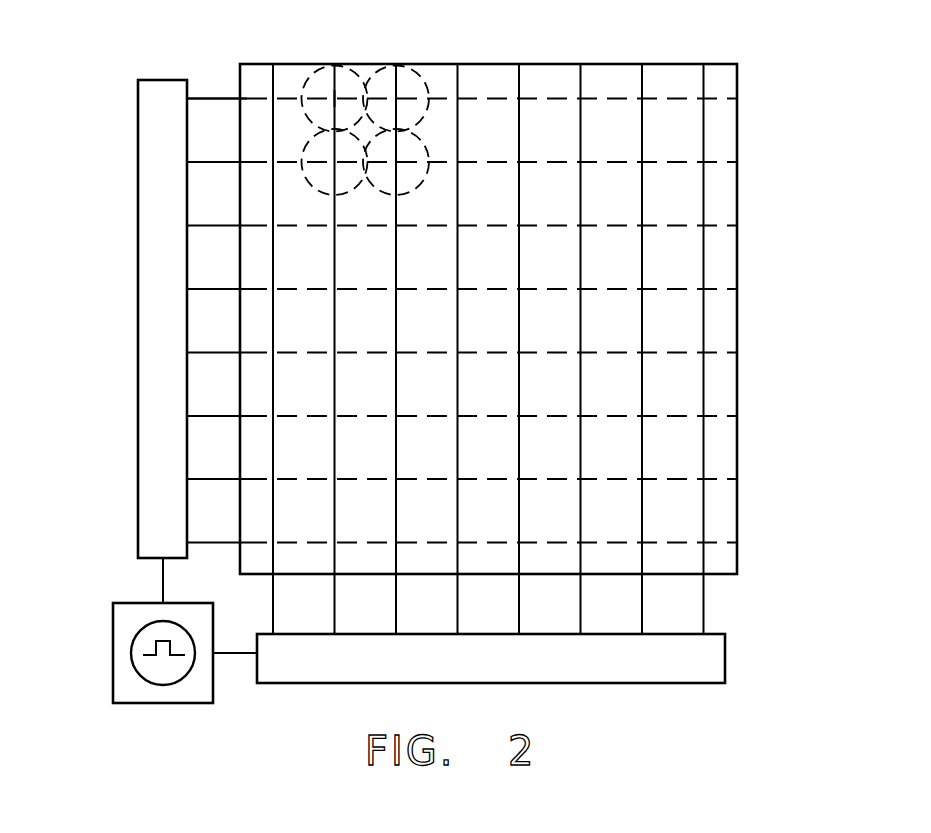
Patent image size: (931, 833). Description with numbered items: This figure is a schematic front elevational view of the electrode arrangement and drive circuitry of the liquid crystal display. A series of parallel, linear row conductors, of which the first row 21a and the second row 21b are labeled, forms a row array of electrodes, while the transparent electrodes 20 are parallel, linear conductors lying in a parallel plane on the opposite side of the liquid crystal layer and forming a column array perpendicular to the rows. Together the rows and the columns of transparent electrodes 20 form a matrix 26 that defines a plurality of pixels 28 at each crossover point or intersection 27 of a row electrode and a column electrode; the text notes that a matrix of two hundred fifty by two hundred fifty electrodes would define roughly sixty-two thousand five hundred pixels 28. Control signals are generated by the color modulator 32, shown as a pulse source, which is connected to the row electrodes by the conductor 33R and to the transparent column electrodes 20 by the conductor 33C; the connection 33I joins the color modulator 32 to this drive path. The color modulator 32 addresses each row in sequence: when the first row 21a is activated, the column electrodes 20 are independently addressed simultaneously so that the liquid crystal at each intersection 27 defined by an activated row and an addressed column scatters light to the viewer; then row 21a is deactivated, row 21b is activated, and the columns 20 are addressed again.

The transparent electrodes 20 is at (640, 87).
The first row electrode 21a is at (257, 96).
The second row electrode 21b is at (283, 162).
The matrix 26 is at (506, 320).
The intersection 27 is at (397, 97).
The pixels 28 is at (307, 70).
The color modulator 32 is at (123, 668).
The conductor 33R is at (140, 492).
The conductor 33C is at (282, 683).
The driver interconnection 33I is at (152, 708).